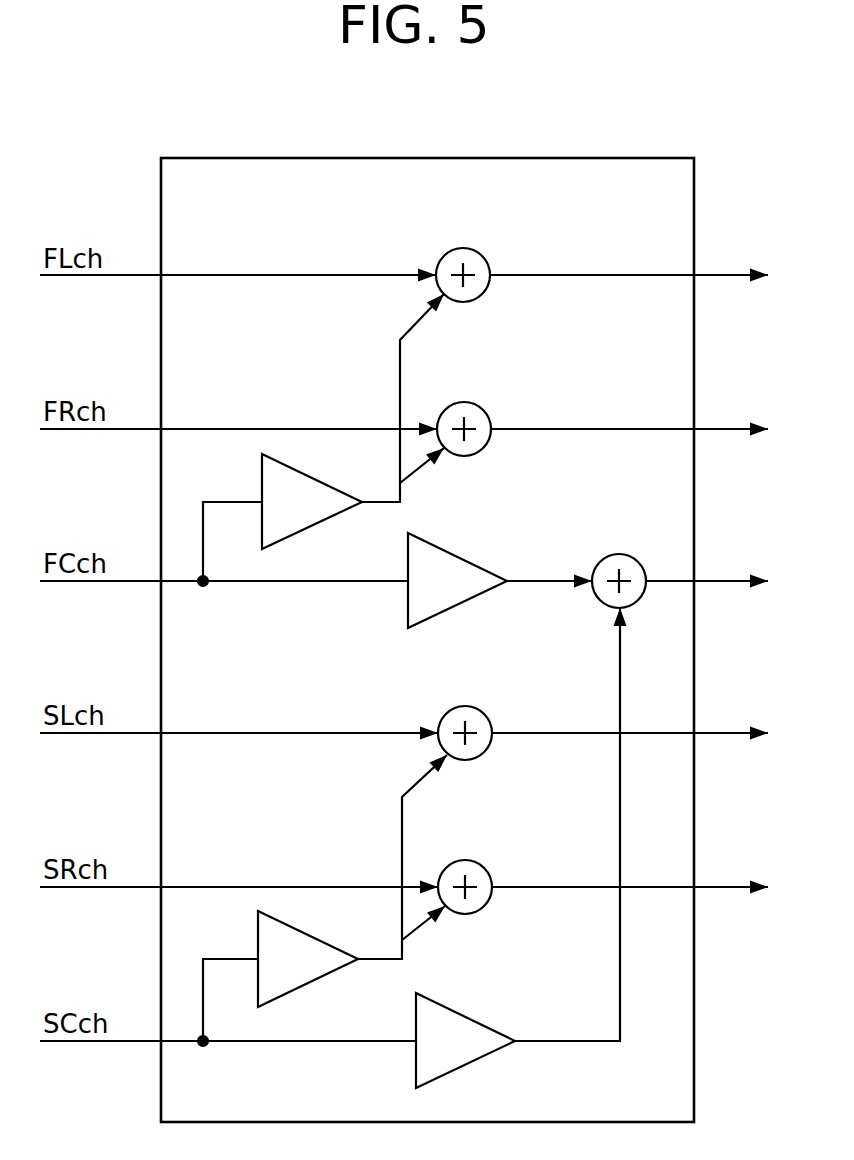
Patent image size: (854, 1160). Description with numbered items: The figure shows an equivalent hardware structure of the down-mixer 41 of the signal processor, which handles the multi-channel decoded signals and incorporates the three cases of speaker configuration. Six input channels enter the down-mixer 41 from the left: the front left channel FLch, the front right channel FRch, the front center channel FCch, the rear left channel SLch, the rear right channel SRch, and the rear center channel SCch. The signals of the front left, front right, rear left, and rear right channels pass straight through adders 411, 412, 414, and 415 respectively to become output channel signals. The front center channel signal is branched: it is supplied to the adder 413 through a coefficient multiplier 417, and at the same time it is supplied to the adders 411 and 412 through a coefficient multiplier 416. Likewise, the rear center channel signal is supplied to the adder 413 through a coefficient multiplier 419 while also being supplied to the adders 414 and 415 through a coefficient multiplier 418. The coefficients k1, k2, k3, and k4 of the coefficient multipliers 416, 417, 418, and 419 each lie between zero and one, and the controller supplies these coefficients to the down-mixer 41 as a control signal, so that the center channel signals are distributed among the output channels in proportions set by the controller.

The down-mixer 41 is at (263, 157).
The adder 411 is at (477, 296).
The adder 412 is at (478, 450).
The adder 413 is at (634, 558).
The adder 414 is at (479, 754).
The adder 415 is at (479, 908).
The coefficient multiplier 416 is at (300, 531).
The coefficient multiplier 417 is at (451, 606).
The coefficient multiplier 418 is at (296, 988).
The coefficient multiplier 419 is at (468, 1066).